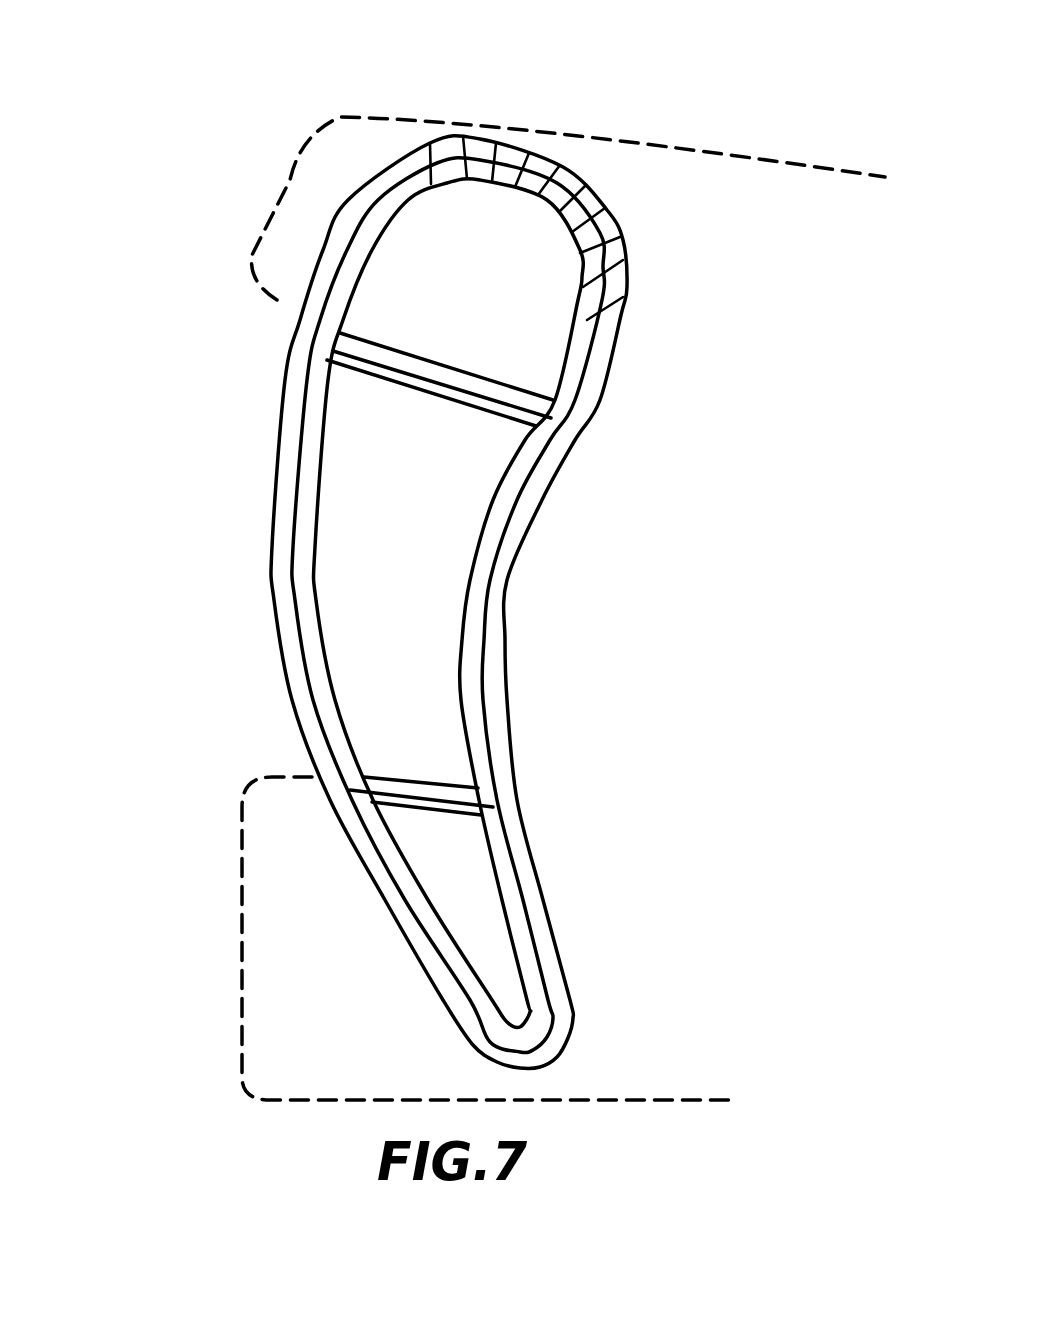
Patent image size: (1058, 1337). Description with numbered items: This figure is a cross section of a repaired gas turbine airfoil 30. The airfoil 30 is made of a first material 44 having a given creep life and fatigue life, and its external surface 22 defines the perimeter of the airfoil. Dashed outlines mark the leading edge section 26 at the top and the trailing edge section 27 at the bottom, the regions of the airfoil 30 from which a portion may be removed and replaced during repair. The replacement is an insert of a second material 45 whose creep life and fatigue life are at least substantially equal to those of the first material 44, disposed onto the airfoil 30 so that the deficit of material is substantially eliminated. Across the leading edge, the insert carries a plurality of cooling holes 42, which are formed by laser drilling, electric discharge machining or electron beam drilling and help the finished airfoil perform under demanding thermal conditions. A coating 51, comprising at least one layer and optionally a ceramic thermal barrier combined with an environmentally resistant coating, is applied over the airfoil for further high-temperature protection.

The airfoil 30 is at (750, 40).
The external surface 22 is at (460, 602).
The leading edge section 26 is at (287, 183).
The trailing edge section 27 is at (240, 957).
The cooling holes 42 is at (623, 220).
The first material 44 is at (497, 543).
The second material 45 is at (583, 333).
The coating 51 is at (284, 573).